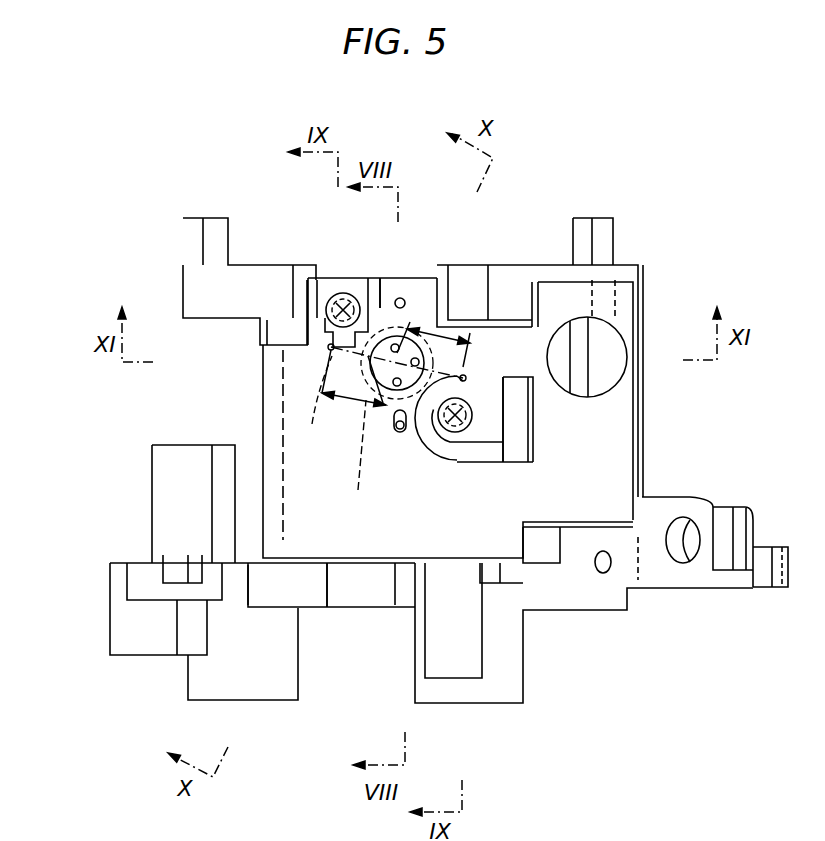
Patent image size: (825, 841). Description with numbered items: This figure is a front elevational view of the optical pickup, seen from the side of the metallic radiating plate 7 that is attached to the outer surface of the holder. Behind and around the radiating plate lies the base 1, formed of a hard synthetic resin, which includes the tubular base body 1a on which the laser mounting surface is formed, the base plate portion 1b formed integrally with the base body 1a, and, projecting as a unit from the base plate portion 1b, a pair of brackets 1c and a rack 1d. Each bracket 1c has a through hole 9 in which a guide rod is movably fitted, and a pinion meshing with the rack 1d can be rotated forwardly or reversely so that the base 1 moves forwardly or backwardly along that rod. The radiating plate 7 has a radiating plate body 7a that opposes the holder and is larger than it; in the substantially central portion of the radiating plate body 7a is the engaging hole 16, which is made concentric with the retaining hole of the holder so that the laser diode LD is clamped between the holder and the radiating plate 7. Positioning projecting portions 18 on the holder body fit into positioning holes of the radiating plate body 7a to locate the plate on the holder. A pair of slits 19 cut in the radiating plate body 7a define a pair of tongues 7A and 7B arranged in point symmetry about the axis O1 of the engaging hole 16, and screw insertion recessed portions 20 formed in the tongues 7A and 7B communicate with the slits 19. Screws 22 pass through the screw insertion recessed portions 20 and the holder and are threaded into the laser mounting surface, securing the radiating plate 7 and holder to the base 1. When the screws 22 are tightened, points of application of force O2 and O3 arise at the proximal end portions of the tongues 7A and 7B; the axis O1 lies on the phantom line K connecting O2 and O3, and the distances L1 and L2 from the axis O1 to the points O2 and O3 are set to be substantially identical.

The base 1 is at (176, 270).
The base body 1a is at (292, 468).
The base plate portion 1b is at (315, 594).
The bracket 1c is at (660, 510).
The rack 1d is at (783, 588).
The radiating plate 7 is at (256, 406).
The radiating plate body 7a is at (344, 542).
The tongue 7A is at (332, 278).
The tongue 7B is at (508, 440).
The through hole 9 is at (676, 552).
The engaging hole 16 is at (383, 398).
The positioning projecting portion 18 is at (405, 298).
The slit 19 is at (377, 279).
The screw insertion recessed portion 20 is at (350, 298).
The screw 22 is at (340, 292).
The phantom line K is at (312, 423).
The distance L1 is at (374, 386).
The distance L2 is at (442, 326).
The laser diode LD is at (358, 492).
The axis O1 is at (410, 362).
The point of application of force O2 is at (330, 350).
The point of application of force O3 is at (466, 377).